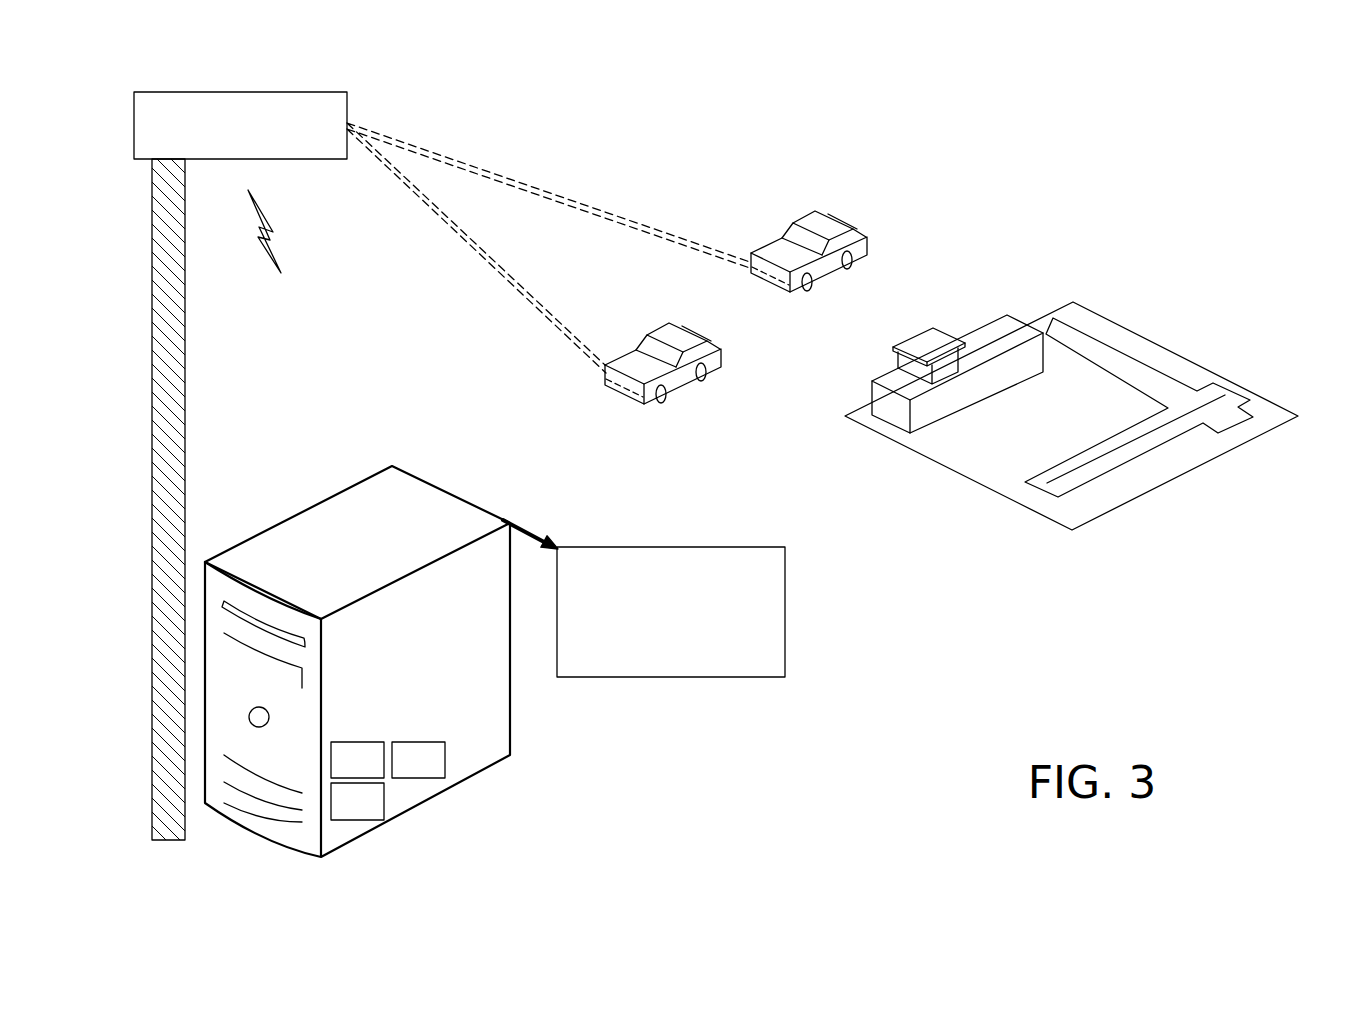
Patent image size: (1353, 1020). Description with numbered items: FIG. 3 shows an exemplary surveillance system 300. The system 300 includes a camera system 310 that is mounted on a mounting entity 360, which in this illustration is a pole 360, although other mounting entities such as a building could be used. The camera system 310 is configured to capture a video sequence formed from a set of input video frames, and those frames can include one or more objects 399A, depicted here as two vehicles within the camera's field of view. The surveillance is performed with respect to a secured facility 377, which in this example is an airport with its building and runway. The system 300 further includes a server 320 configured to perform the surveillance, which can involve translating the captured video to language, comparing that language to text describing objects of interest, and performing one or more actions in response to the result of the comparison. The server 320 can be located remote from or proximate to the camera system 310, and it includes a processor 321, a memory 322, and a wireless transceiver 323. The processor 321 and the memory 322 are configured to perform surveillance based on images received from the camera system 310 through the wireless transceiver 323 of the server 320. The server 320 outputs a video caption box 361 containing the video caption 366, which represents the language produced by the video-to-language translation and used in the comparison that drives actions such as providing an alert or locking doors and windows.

The system 300 is at (836, 52).
The camera system 310 is at (221, 152).
The server 320 is at (319, 574).
The processor 321 is at (340, 774).
The memory 322 is at (340, 816).
The wireless transceiver 323 is at (401, 774).
The mounting entity 360 is at (198, 381).
The video caption output box 361 is at (708, 595).
The video caption 366 is at (756, 616).
The secured facility 377 is at (1155, 323).
The objects 399A is at (864, 264).